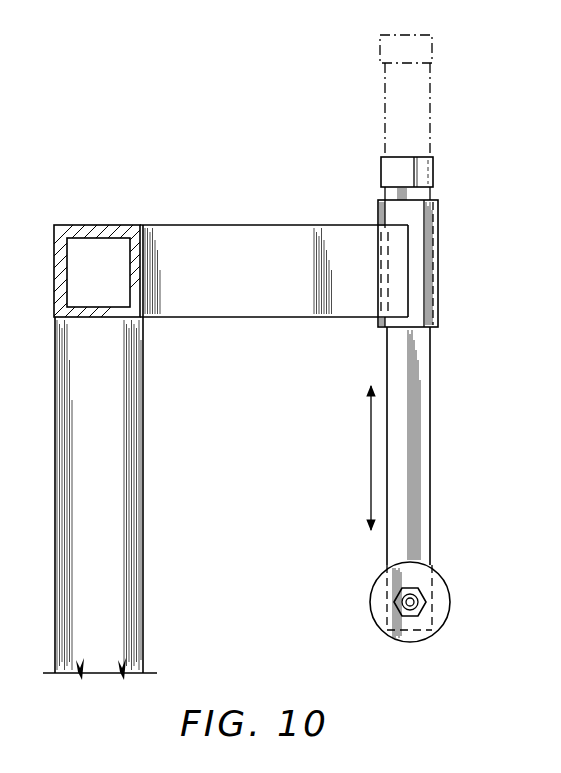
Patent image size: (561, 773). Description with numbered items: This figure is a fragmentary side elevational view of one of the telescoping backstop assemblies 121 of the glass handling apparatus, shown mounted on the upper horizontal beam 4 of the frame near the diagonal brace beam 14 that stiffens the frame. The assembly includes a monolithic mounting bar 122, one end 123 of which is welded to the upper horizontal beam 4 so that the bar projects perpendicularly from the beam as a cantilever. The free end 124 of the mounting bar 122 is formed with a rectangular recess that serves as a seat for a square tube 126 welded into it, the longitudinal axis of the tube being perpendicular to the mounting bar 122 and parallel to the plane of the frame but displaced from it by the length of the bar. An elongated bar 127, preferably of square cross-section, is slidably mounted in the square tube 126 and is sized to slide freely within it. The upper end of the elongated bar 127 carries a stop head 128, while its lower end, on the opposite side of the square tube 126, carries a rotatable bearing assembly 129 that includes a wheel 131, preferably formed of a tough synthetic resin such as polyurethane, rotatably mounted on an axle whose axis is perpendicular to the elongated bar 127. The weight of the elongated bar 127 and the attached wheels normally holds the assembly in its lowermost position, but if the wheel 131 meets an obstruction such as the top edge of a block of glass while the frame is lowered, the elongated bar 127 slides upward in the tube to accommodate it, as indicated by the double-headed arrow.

The upper horizontal beam 4 is at (88, 317).
The diagonal brace beam 14 is at (115, 452).
The backstop assembly 121 is at (451, 216).
The mounting bar 122 is at (243, 240).
The end of mounting bar 123 is at (140, 283).
The free end of mounting bar 124 is at (408, 293).
The square tube 126 is at (433, 280).
The elongated bar 127 is at (427, 437).
The stop head 128 is at (393, 170).
The rotatable bearing assembly 129 is at (448, 572).
The wheel 131 is at (441, 610).